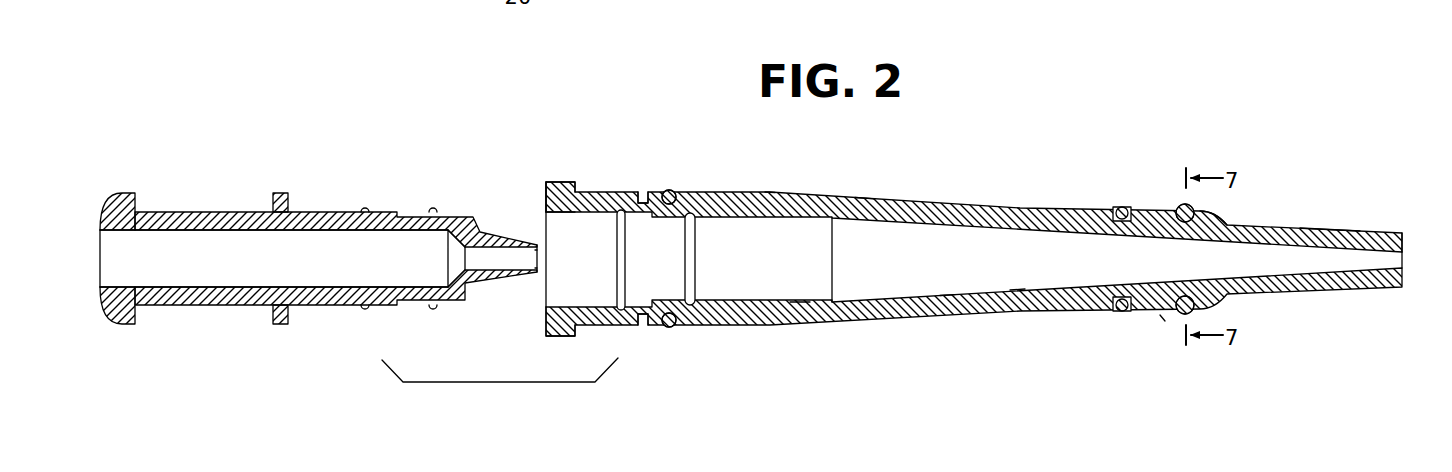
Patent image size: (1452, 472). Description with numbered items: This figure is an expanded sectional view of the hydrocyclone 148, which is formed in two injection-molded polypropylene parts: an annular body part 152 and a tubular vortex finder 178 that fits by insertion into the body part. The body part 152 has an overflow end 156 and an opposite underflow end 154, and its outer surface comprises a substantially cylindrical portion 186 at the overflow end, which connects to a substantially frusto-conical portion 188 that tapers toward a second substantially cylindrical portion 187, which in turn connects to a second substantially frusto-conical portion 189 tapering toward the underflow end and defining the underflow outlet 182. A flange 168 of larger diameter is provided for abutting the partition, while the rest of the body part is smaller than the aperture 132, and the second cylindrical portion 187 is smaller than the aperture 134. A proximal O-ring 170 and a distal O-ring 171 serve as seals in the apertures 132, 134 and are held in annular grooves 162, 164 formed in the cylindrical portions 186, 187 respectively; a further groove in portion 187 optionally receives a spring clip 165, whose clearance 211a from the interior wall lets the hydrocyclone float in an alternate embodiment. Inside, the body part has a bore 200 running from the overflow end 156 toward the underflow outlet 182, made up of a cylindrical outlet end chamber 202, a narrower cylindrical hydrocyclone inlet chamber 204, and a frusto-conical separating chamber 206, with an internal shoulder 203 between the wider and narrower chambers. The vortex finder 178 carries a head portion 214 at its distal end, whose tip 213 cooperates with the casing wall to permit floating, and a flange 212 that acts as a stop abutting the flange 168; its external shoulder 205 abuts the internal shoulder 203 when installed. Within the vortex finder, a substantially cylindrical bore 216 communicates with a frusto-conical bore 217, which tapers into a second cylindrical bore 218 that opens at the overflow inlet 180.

The tubular vortex finder 178 is at (203, 303).
The head portion 214 is at (122, 193).
The tip 213 is at (100, 292).
The flange 212 is at (283, 324).
The external shoulder 205 is at (400, 213).
The substantially cylindrical bore 216 is at (378, 257).
The frusto-conical bore 217 is at (450, 262).
The second cylindrical bore 218 is at (512, 262).
The overflow inlet 180 is at (539, 258).
The annular body part 152 is at (960, 208).
The overflow end 156 is at (547, 181).
The flange 168 is at (549, 182).
The cylindrical outlet end chamber 202 is at (586, 315).
The internal shoulder 203 is at (643, 220).
The aperture 132 is at (681, 324).
The proximal O-ring 170 is at (674, 197).
The annular groove 162 is at (668, 328).
The substantially cylindrical portion 186 is at (767, 192).
The substantially frusto-conical portion 188 is at (865, 198).
The bore 200 is at (903, 270).
The cylindrical hydrocyclone inlet chamber 204 is at (797, 290).
The hydrocyclone 148 is at (947, 317).
The frusto-conical separating chamber 206 is at (1017, 263).
The distal O-ring 171 is at (1120, 208).
The annular groove 164 is at (1122, 311).
The second substantially cylindrical portion 187 is at (1156, 209).
The aperture 134 is at (1133, 310).
The spring clip 165 is at (1195, 209).
The second substantially frusto-conical portion 189 is at (1338, 230).
The underflow end 154 is at (1402, 233).
The underflow outlet 182 is at (1396, 260).
The clearance 211a is at (1164, 321).